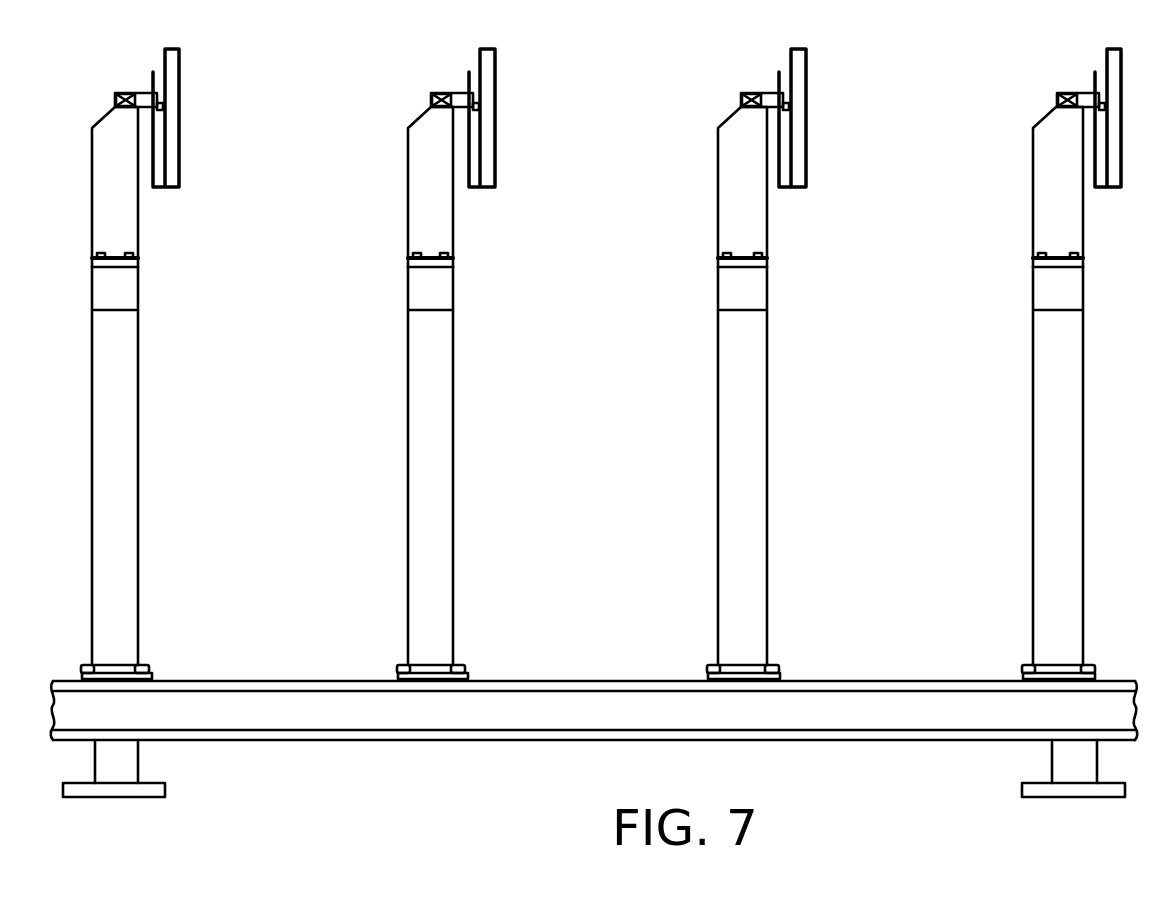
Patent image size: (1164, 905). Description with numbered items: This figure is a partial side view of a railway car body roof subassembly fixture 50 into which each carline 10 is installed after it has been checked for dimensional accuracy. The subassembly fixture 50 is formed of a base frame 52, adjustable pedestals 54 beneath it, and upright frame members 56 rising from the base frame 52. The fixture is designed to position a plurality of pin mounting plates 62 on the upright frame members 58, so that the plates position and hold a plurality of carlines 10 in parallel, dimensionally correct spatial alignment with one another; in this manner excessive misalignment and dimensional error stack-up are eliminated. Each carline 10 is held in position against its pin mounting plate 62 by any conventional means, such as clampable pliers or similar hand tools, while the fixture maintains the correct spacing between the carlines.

The carline 10 is at (180, 48).
The subassembly fixture 50 is at (578, 745).
The base frame 52 is at (740, 737).
The adjustable pedestal 54 is at (165, 786).
The upright frame member 56 is at (415, 452).
The upright frame member 58 is at (418, 223).
The pin mounting plate 62 is at (157, 92).